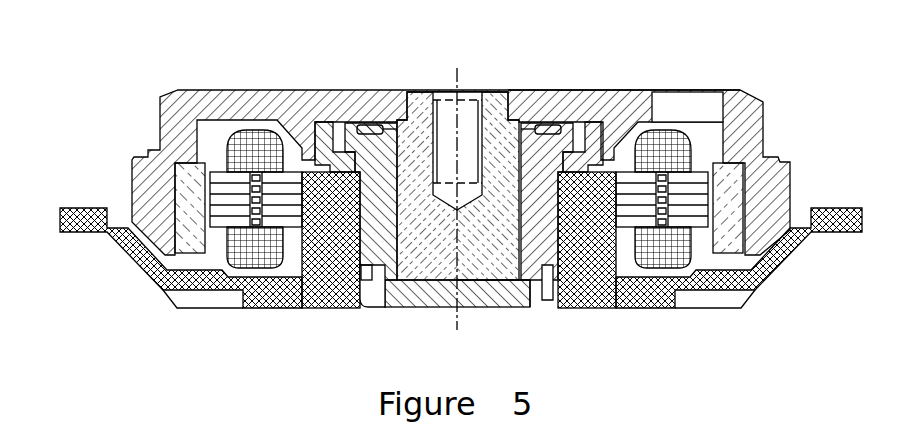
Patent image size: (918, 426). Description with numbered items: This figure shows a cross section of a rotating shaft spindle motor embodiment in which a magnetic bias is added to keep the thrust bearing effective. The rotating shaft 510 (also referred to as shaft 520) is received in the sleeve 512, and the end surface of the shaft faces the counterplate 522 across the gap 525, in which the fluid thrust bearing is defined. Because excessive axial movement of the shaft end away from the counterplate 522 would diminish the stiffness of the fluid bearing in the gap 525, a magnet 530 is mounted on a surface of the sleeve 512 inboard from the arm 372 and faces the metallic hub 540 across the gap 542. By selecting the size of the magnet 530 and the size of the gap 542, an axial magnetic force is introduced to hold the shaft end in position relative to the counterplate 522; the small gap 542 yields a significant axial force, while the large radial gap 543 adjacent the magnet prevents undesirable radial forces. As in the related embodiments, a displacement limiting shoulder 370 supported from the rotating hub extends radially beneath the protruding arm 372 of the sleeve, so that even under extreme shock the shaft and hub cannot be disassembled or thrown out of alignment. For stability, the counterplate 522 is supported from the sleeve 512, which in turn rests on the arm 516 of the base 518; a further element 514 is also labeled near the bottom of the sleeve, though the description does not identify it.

The displacement limiting shoulder 370 is at (310, 125).
The protruding arm 372 is at (348, 132).
The radial gap 543 is at (512, 127).
The magnet 530 is at (543, 130).
The gap 542 is at (597, 90).
The metallic hub 540 is at (677, 90).
The base 518 is at (135, 262).
The arm of base 516 is at (300, 308).
The thrust washer 514 is at (367, 308).
The shaft 520 is at (403, 308).
The gap 525 is at (440, 308).
The counterplate 522 is at (488, 308).
The shaft 510 is at (522, 258).
The sleeve 512 is at (588, 262).